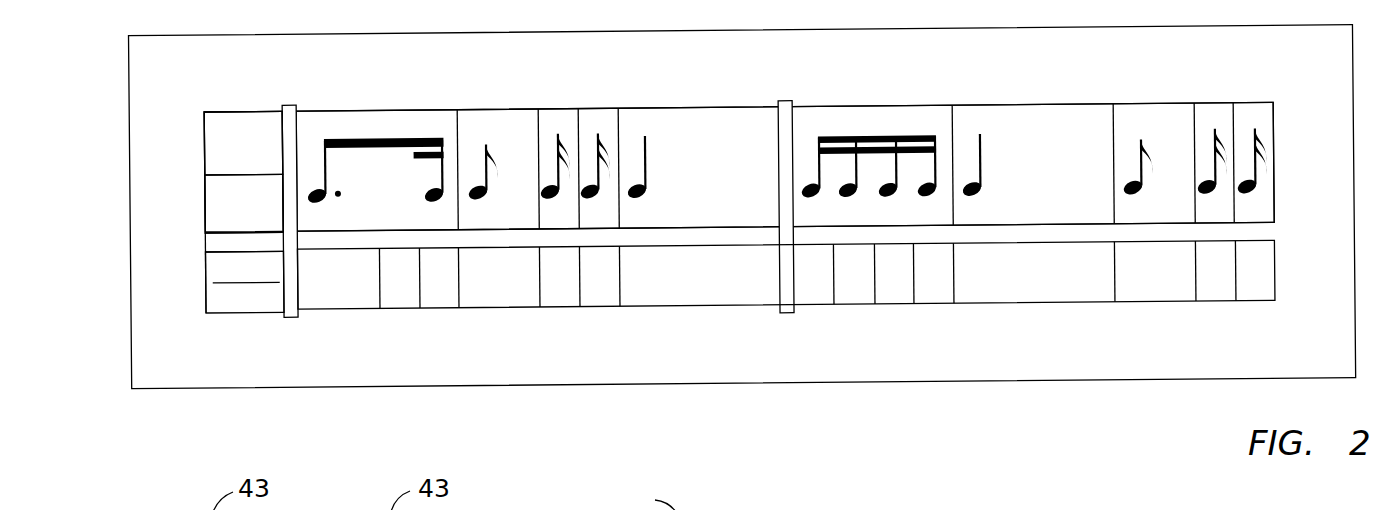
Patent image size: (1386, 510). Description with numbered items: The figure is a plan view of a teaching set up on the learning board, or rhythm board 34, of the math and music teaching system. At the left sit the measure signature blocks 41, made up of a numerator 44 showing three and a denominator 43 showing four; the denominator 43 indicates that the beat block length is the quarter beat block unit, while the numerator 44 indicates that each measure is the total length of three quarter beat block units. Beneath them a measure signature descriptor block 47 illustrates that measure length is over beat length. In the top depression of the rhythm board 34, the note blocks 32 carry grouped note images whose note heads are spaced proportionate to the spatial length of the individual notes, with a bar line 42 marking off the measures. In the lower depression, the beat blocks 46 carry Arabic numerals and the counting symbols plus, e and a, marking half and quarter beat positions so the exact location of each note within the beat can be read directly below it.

The note blocks 32 is at (680, 96).
The learning board 34 is at (933, 72).
The measure signature blocks 41 is at (193, 136).
The measure signature bar line 42 is at (786, 99).
The denominator block 43 is at (212, 203).
The numerator block 44 is at (237, 122).
The beat blocks 46 is at (682, 298).
The measure signature descriptor block 47 is at (243, 305).